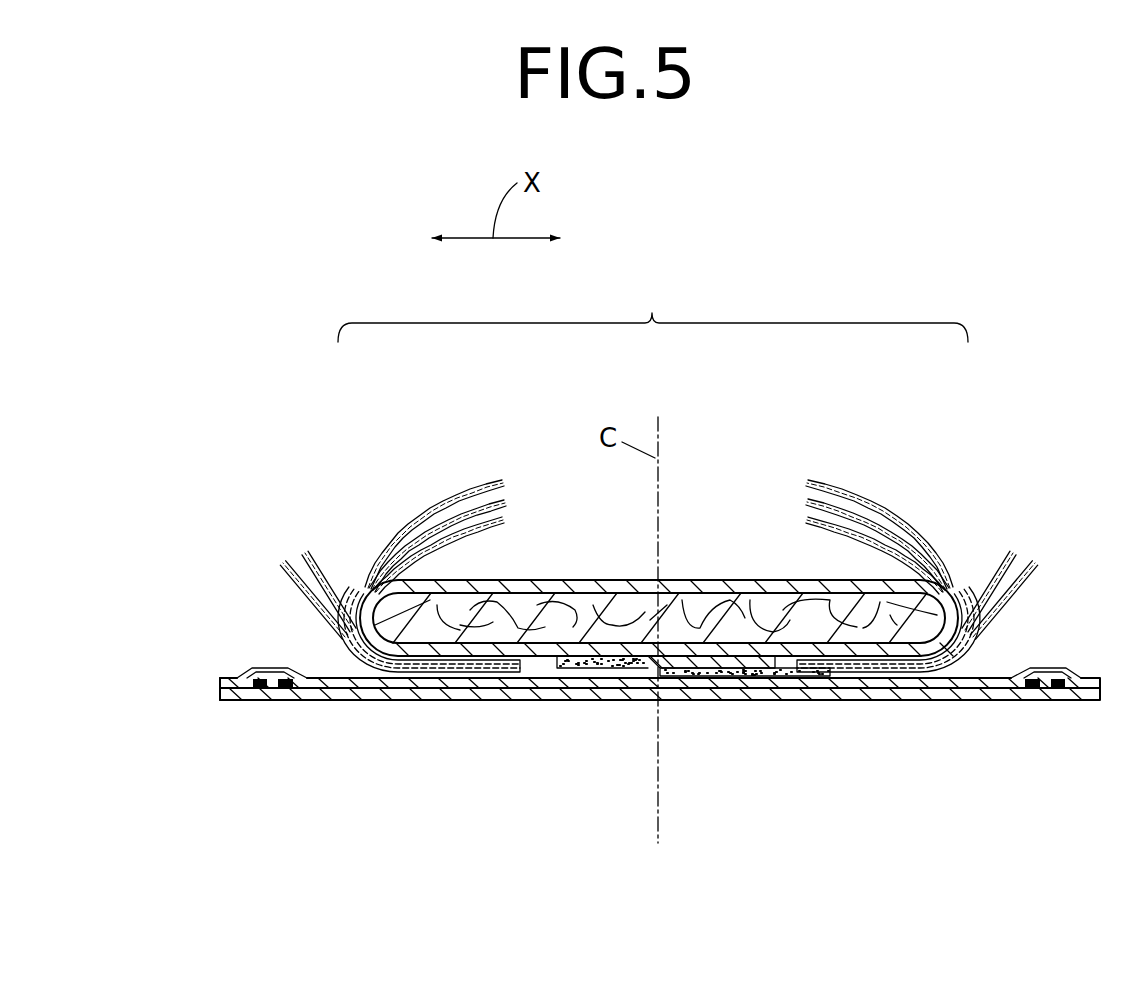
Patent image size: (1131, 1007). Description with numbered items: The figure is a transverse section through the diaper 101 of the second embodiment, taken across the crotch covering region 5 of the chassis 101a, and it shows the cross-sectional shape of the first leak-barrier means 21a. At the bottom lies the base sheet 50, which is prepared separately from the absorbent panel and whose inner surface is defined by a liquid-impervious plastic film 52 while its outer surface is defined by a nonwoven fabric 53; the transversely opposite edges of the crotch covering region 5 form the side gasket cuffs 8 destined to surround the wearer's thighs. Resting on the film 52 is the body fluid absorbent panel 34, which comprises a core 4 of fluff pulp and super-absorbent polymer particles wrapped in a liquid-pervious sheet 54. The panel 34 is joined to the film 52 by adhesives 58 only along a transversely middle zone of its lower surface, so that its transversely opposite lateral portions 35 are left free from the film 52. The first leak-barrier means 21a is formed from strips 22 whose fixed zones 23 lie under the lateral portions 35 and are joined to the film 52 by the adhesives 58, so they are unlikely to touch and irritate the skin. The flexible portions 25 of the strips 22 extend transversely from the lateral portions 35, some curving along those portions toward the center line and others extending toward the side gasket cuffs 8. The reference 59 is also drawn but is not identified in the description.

The diaper 101 is at (962, 280).
The chassis 101a is at (673, 703).
The body fluid absorbent panel 34 is at (653, 309).
The first leak-barrier means 21a is at (449, 461).
The flexible portions 25 is at (430, 510).
The strips 22 is at (470, 528).
The transversely opposite lateral portions 35 is at (362, 572).
The liquid-pervious sheet 54 is at (600, 580).
The core 4 is at (690, 605).
The fixed zones 23 is at (518, 700).
The adhesives 58 is at (597, 700).
The joining portion 59 is at (784, 658).
The crotch covering region 5 is at (467, 700).
The side gasket cuffs 8 is at (257, 701).
The nonwoven fabric 53 is at (230, 703).
The liquid-impervious plastic film 52 is at (260, 666).
The base sheet 50 is at (283, 707).